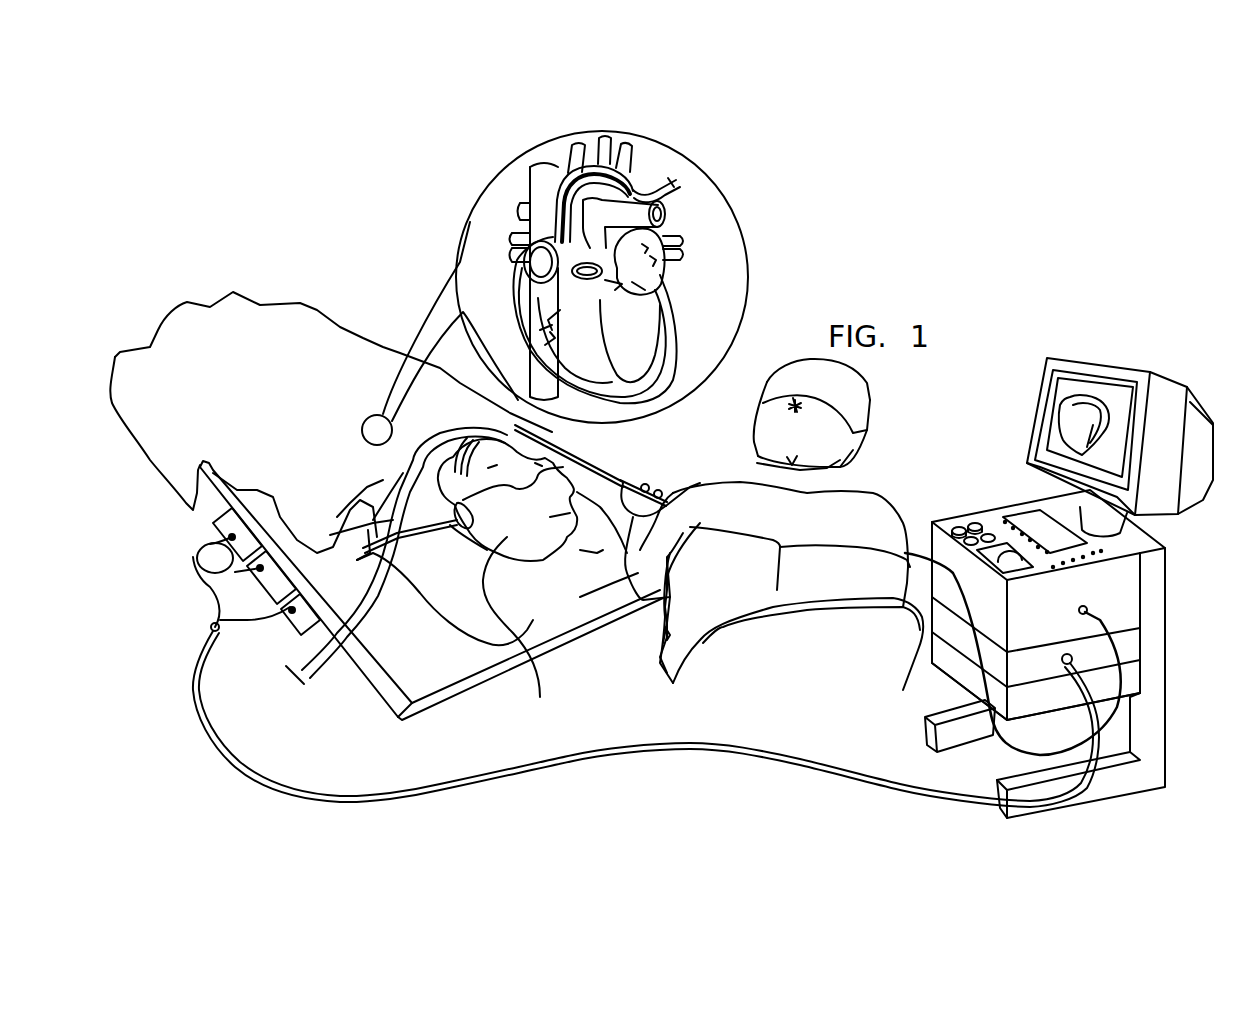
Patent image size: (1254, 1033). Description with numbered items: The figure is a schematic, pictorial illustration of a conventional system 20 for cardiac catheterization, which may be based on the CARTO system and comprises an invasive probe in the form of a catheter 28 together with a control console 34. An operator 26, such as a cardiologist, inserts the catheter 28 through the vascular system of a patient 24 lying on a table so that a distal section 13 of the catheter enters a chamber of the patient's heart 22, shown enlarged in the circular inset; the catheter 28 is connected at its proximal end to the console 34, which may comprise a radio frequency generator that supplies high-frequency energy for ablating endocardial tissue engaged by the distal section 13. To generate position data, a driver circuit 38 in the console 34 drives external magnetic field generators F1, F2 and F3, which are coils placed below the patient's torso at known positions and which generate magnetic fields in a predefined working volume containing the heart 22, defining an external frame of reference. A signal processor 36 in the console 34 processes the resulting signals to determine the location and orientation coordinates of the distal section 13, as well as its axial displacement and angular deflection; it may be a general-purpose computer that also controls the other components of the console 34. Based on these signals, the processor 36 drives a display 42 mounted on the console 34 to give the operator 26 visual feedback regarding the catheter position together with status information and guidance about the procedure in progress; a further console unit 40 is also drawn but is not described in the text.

The distal section 13 is at (656, 278).
The system 20 is at (996, 273).
The heart 22 is at (609, 318).
The patient 24 is at (517, 629).
The operator 26 is at (870, 503).
The catheter 28 is at (678, 184).
The control console 34 is at (1077, 654).
The signal processor 36 is at (1130, 580).
The driver circuit 38 is at (1130, 650).
The driver unit 40 is at (1130, 685).
The display 42 is at (1160, 387).
The magnetic field generator F1 is at (210, 572).
The magnetic field generator F2 is at (292, 610).
The magnetic field generator F3 is at (307, 632).